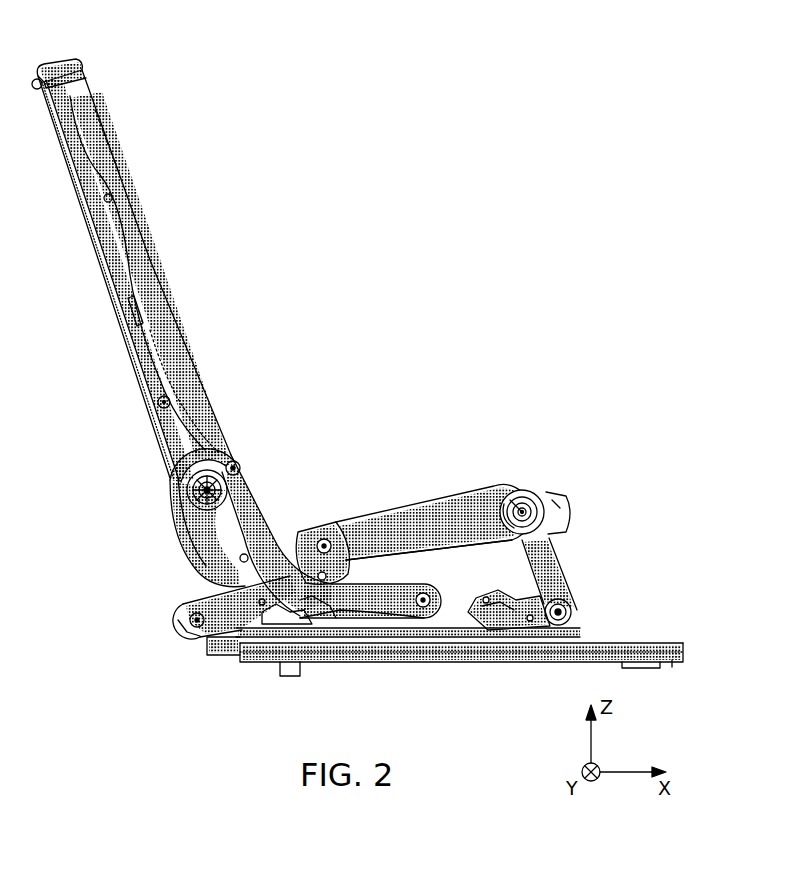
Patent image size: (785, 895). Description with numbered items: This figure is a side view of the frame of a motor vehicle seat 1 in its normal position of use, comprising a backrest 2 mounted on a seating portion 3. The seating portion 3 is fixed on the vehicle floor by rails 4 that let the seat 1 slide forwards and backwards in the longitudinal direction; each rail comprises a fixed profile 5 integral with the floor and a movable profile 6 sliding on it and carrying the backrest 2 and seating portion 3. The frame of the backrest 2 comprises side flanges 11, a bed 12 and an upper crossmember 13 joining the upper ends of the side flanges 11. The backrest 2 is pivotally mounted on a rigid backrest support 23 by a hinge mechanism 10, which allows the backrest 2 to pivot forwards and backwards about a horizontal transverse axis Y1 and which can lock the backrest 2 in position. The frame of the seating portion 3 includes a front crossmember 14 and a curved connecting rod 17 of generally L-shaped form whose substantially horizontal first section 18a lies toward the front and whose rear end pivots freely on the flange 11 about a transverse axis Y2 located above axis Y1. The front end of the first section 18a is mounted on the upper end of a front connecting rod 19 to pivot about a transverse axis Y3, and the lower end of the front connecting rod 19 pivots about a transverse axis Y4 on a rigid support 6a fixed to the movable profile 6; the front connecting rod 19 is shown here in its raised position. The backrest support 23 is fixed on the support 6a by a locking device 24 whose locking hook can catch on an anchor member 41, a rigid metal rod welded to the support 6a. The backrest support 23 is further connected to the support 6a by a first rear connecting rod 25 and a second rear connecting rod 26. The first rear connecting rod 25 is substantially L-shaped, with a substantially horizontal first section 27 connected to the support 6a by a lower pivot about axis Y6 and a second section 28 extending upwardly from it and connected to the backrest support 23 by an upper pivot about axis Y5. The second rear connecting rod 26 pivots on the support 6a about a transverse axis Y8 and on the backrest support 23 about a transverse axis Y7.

The motor vehicle seat 1 is at (392, 248).
The backrest 2 is at (132, 248).
The seating portion 3 is at (532, 471).
The rails 4 is at (690, 644).
The fixed profile 5 is at (374, 654).
The movable profile 6 is at (226, 656).
The rigid support 6a is at (470, 610).
The hinge mechanism 10 is at (166, 498).
The side flange 11 is at (176, 343).
The bed 12 is at (80, 224).
The upper crossmember 13 is at (55, 66).
The front crossmember 14 is at (570, 512).
The curved connecting rod 17 is at (468, 491).
The first section 18a is at (412, 512).
The front connecting rod 19 is at (550, 556).
The backrest support 23 is at (203, 556).
The locking device 24 is at (320, 620).
The first rear connecting rod 25 is at (387, 631).
The second rear connecting rod 26 is at (206, 617).
The first section 27 is at (370, 604).
The second section 28 is at (254, 522).
The anchor member 41 is at (276, 620).
The transverse axis Y1 is at (183, 490).
The transverse axis Y2 is at (157, 403).
The transverse axis of rotation Y3 is at (550, 494).
The transverse axis of rotation Y4 is at (572, 614).
The transverse axis of rotation Y5 is at (240, 462).
The transverse axis of rotation Y6 is at (442, 638).
The transverse axis of rotation Y7 is at (326, 538).
The transverse axis of rotation Y8 is at (180, 632).